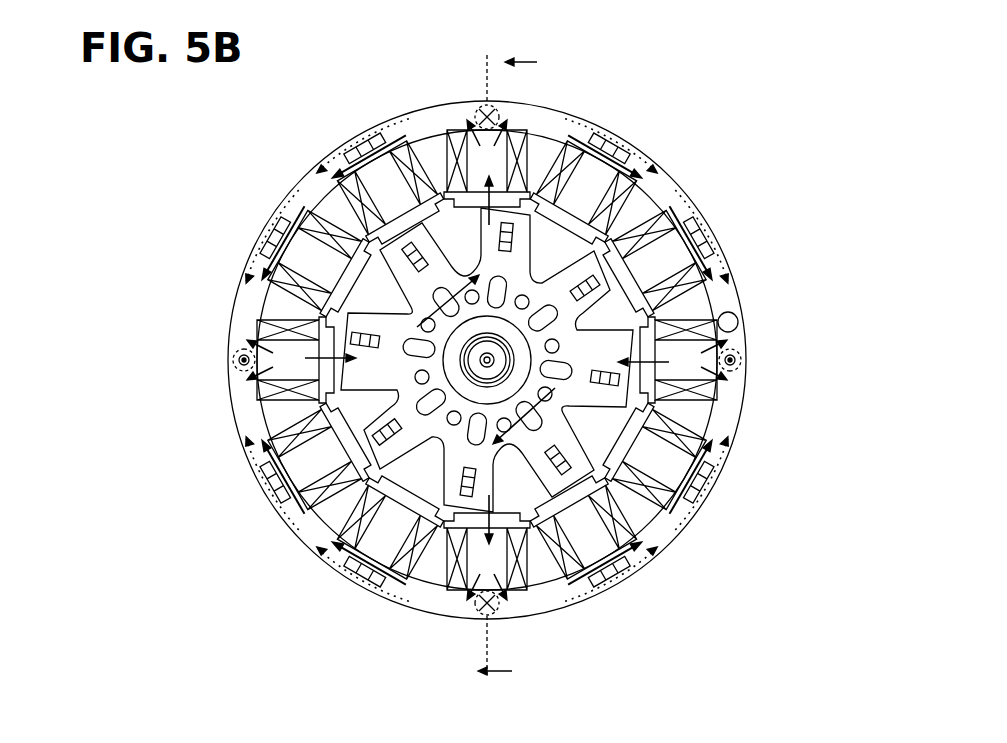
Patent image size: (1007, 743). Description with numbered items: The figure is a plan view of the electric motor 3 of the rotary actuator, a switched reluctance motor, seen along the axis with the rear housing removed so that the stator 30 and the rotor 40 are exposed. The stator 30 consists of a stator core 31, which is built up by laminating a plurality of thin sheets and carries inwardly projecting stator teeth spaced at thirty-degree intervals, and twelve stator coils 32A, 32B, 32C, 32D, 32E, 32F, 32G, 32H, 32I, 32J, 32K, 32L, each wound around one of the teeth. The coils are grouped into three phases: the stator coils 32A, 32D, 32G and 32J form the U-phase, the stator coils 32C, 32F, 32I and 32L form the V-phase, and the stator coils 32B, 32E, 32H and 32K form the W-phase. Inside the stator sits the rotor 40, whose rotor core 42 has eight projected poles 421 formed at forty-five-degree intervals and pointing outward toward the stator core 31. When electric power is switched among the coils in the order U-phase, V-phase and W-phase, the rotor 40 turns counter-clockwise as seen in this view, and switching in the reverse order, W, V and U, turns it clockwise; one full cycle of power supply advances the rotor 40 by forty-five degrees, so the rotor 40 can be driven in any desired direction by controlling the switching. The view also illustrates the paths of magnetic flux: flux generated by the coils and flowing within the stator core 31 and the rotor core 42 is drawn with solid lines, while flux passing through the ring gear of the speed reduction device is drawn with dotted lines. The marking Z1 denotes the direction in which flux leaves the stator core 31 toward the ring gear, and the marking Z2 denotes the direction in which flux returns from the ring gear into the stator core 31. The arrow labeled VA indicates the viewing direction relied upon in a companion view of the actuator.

The electric motor 3 is at (694, 513).
The stator 30 is at (364, 126).
The stator core 31 is at (342, 152).
The stator coil 32A is at (453, 134).
The stator coil 32B is at (345, 200).
The stator coil 32C is at (283, 295).
The stator coil 32D is at (300, 400).
The stator coil 32E is at (308, 508).
The stator coil 32F is at (425, 565).
The stator coil 32G is at (527, 563).
The stator coil 32H is at (640, 540).
The stator coil 32I is at (700, 432).
The stator coil 32J is at (686, 316).
The stator coil 32K is at (662, 190).
The stator coil 32L is at (567, 140).
The rotor 40 is at (403, 308).
The rotor core 42 is at (608, 308).
The projected pole 421 is at (612, 150).
The direction of magnetic flux from stator core to ring gear Z1 is at (484, 104).
The direction of magnetic flux from ring gear to stator core Z2 is at (234, 359).
The viewing direction VA is at (525, 366).